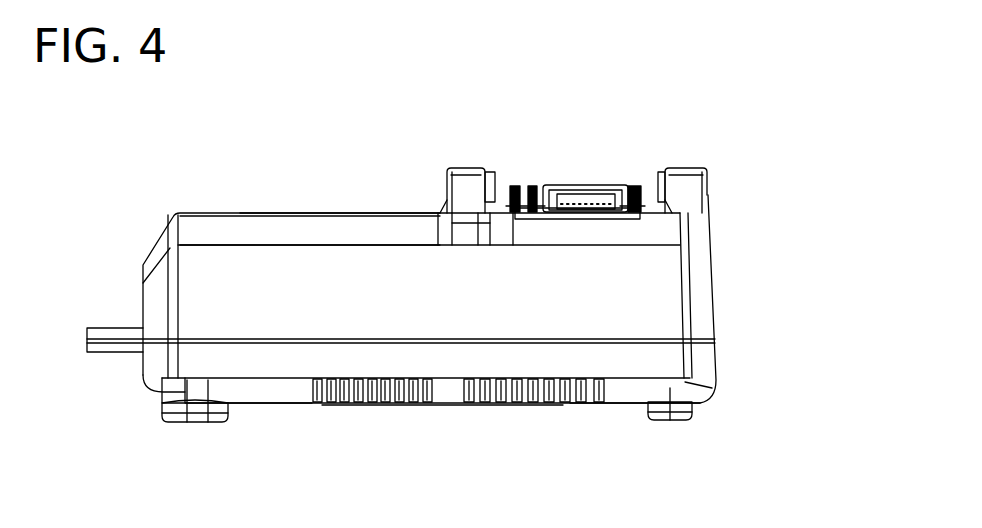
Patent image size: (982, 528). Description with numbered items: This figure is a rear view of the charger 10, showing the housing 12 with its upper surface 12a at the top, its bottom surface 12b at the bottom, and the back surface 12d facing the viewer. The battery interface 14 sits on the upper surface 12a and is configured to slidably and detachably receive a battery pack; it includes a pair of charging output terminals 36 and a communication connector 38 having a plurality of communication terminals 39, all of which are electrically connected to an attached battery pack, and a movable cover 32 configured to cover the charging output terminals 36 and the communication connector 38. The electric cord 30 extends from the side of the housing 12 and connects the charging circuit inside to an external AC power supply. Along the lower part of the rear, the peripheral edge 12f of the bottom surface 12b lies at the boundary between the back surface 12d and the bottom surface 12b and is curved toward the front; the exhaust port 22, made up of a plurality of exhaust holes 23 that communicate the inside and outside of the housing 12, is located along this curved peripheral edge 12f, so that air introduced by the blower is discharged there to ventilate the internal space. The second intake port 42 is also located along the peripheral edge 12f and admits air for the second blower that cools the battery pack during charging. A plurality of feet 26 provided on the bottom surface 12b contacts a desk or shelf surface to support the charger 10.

The charger 10 is at (753, 138).
The housing 12 is at (698, 275).
The upper surface 12a is at (312, 213).
The bottom surface 12b is at (623, 402).
The back surface 12d is at (228, 262).
The peripheral edge 12f is at (252, 392).
The battery interface 14 is at (652, 158).
The exhaust port 22 is at (435, 412).
The exhaust holes 23 is at (312, 393).
The feet 26 is at (173, 415).
The electric cord 30 is at (98, 328).
The movable cover 32 is at (545, 185).
The charging output terminals 36 is at (535, 185).
The communication connector 38 is at (598, 185).
The communication terminals 39 is at (575, 185).
The second intake port 42 is at (463, 412).